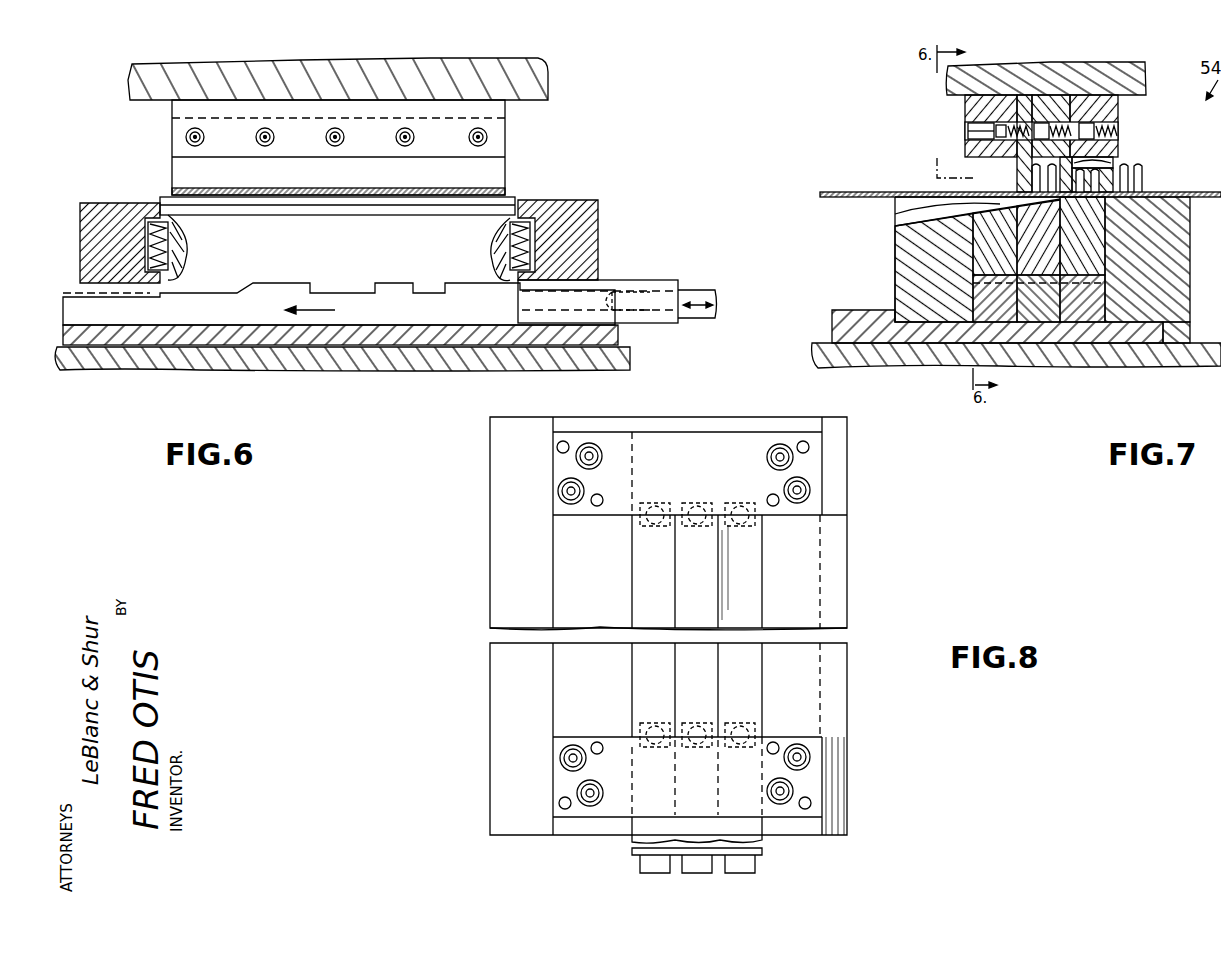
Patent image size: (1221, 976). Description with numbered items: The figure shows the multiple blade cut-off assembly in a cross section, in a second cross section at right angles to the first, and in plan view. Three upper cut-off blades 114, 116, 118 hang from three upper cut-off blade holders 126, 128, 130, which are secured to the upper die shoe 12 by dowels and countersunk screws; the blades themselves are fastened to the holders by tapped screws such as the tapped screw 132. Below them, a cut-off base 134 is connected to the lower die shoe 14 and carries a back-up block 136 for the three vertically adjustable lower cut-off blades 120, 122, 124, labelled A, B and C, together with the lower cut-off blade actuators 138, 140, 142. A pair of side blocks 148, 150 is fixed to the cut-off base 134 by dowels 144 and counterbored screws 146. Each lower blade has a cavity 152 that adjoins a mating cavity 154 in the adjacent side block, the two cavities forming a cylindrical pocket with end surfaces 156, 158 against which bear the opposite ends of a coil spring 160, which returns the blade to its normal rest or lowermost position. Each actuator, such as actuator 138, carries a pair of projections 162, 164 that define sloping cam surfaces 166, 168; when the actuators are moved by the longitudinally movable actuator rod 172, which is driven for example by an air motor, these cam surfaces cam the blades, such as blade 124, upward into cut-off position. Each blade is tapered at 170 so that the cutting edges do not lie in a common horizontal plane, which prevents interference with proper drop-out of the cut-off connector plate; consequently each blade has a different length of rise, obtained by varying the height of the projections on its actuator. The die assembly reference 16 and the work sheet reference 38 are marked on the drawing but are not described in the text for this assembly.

In FIG. 6, the upper die shoe 12 is at (541, 88).
In FIG. 7, the upper die shoe 12 is at (1130, 78).
In FIG. 6, the lower die shoe 14 is at (630, 355).
In FIG. 7, the lower die shoe 14 is at (1214, 352).
In FIG. 6, the die assembly 16 is at (485, 196).
In FIG. 7, the work sheet 38 is at (1142, 192).
In FIG. 6, the upper cut-off blade 114 is at (203, 191).
In FIG. 7, the upper cut-off blade 114 is at (1018, 178).
In FIG. 7, the upper cut-off blade 116 is at (1100, 160).
In FIG. 7, the upper cut-off blade 118 is at (1113, 185).
In FIG. 7, the lower cut-off blade 120 is at (1095, 265).
In FIG. 8, the lower cut-off blade 120 is at (757, 594).
In FIG. 7, the lower cut-off blade 122 is at (1038, 265).
In FIG. 8, the lower cut-off blade 122 is at (712, 594).
In FIG. 6, the lower cut-off blade 124 is at (333, 252).
In FIG. 7, the lower cut-off blade 124 is at (975, 272).
In FIG. 8, the lower cut-off blade 124 is at (669, 594).
In FIG. 6, the upper cut-off blade holder 126 is at (386, 147).
In FIG. 7, the upper cut-off blade holder 126 is at (1000, 100).
In FIG. 7, the upper cut-off blade holder 128 is at (1048, 100).
In FIG. 7, the upper cut-off blade holder 130 is at (1095, 100).
In FIG. 6, the tapped screw 132 is at (488, 140).
In FIG. 7, the tapped screw 132 is at (1118, 122).
In FIG. 6, the cut-off base 134 is at (385, 347).
In FIG. 7, the cut-off base 134 is at (918, 350).
In FIG. 8, the cut-off base 134 is at (500, 585).
In FIG. 7, the back-up block 136 is at (912, 262).
In FIG. 8, the back-up block 136 is at (601, 594).
In FIG. 6, the lower cut-off blade actuator 138 is at (432, 316).
In FIG. 7, the lower cut-off blade actuator 138 is at (1000, 320).
In FIG. 8, the lower cut-off blade actuator 138 is at (635, 855).
In FIG. 7, the lower cut-off blade actuator 140 is at (1056, 325).
In FIG. 8, the lower cut-off blade actuator 140 is at (760, 868).
In FIG. 7, the lower cut-off blade actuator 142 is at (1100, 320).
In FIG. 8, the lower cut-off blade actuator 142 is at (762, 850).
In FIG. 8, the dowel 144 is at (557, 447).
In FIG. 8, the counterbored screw 146 is at (560, 487).
In FIG. 6, the side block 148 is at (598, 242).
In FIG. 8, the side block 148 is at (756, 777).
In FIG. 6, the side block 150 is at (100, 207).
In FIG. 8, the side block 150 is at (737, 455).
In FIG. 6, the cavity 152 is at (495, 264).
In FIG. 8, the cavity 152 is at (702, 722).
In FIG. 6, the mating cavity 154 is at (548, 232).
In FIG. 8, the mating cavity 154 is at (711, 777).
In FIG. 6, the end surface 156 is at (178, 240).
In FIG. 6, the end surface 158 is at (180, 272).
In FIG. 6, the coil spring 160 is at (150, 226).
In FIG. 8, the coil spring 160 is at (660, 530).
In FIG. 6, the projection 162 is at (270, 292).
In FIG. 6, the projection 164 is at (428, 292).
In FIG. 6, the sloping cam surface 166 is at (228, 290).
In FIG. 6, the sloping cam surface 168 is at (372, 292).
In FIG. 6, the taper 170 is at (440, 207).
In FIG. 7, the taper 170 is at (905, 222).
In FIG. 6, the actuator rod 172 is at (715, 315).